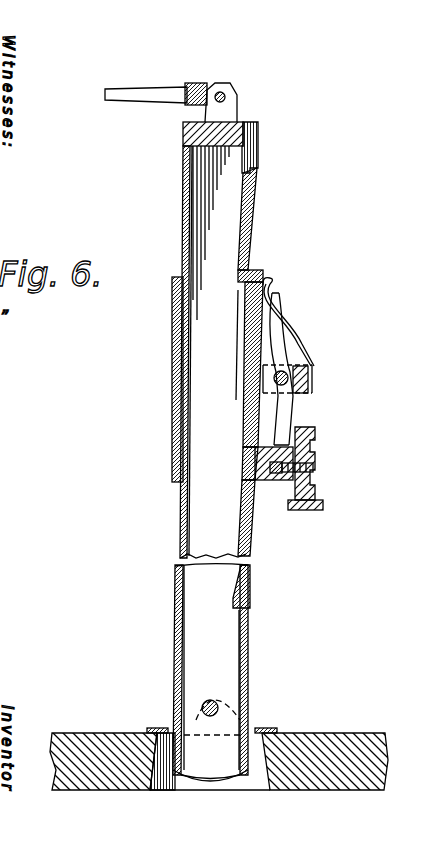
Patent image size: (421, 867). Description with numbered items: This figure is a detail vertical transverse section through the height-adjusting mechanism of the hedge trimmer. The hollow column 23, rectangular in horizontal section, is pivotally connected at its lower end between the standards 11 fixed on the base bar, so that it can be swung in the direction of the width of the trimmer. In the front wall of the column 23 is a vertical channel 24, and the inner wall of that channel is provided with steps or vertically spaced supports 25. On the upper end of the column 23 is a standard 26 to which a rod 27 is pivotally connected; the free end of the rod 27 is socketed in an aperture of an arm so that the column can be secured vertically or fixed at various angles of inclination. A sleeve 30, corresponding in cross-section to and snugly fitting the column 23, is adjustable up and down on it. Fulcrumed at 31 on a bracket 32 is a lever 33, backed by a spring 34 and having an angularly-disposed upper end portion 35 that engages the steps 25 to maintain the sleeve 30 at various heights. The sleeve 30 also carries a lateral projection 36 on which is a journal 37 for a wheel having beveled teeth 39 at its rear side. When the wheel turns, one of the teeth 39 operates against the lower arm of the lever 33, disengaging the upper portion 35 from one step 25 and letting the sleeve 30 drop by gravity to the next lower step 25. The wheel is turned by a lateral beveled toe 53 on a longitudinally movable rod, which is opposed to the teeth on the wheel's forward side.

The standards 11 is at (262, 733).
The column 23 is at (178, 598).
The vertical channel 24 is at (259, 151).
The steps or vertically spaced supports 25 is at (237, 502).
The standard 26 is at (233, 112).
The rod 27 is at (139, 90).
The sleeve 30 is at (172, 425).
The fulcrum 31 is at (293, 393).
The bracket 32 is at (312, 363).
The lever 33 is at (293, 412).
The spring 34 is at (307, 337).
The angularly-disposed upper end portion 35 is at (260, 272).
The lateral projection 36 is at (270, 482).
The journal 37 is at (318, 467).
The beveled teeth 39 is at (312, 455).
The lateral beveled toe 53 is at (316, 499).